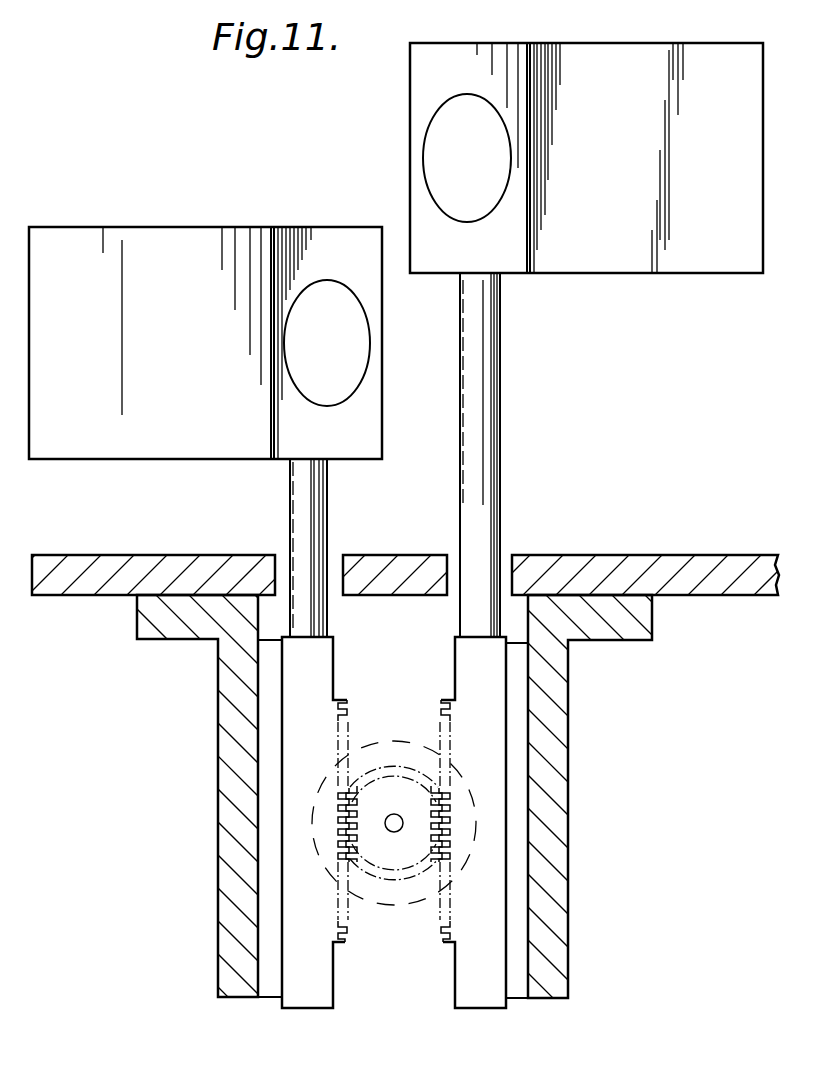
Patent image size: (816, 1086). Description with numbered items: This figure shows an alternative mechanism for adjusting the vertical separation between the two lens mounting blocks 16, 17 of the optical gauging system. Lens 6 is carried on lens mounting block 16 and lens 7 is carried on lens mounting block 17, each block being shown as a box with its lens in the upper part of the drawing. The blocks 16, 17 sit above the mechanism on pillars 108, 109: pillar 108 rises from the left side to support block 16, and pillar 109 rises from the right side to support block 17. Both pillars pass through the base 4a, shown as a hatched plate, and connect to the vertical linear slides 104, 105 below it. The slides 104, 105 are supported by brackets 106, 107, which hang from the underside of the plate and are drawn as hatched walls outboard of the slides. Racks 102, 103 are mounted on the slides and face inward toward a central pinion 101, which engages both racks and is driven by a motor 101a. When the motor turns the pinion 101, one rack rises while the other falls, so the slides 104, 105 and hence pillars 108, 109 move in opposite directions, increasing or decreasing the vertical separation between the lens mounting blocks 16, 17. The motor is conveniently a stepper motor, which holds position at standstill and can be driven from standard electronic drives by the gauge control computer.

The lens mounting block 16 is at (170, 367).
The lens 6 is at (330, 367).
The lens 7 is at (474, 177).
The lens mounting block 17 is at (632, 177).
The pillar 108 is at (300, 505).
The pillar 109 is at (483, 448).
The base 4a is at (693, 568).
The bracket 106 is at (228, 912).
The bracket 107 is at (547, 933).
The vertical linear slide 104 is at (322, 851).
The vertical linear slide 105 is at (464, 851).
The rack 102 is at (362, 858).
The rack 103 is at (440, 948).
The pinion 101 is at (394, 826).
The motor 101a is at (391, 890).